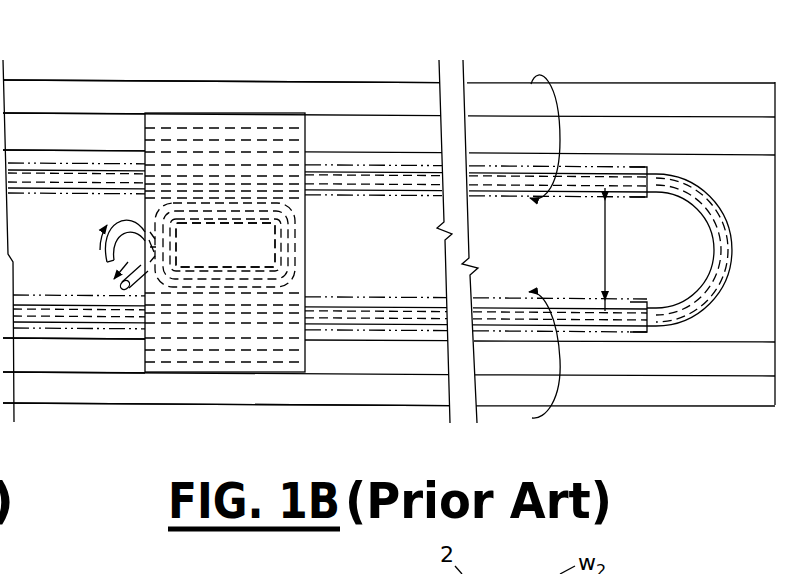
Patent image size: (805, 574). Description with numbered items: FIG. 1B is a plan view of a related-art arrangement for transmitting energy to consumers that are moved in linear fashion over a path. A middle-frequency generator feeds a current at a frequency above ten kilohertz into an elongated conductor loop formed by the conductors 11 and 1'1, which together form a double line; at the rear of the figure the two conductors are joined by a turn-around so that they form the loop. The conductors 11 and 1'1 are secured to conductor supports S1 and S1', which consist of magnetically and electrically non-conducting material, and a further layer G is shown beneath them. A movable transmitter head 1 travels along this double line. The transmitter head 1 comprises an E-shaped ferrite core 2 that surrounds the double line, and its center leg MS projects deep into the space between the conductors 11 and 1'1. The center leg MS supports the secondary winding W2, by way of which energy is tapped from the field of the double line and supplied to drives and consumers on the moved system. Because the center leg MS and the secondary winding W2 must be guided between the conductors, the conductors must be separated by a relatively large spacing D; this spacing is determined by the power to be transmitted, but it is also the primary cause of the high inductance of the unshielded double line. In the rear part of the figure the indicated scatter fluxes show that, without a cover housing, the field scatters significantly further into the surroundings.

The transmitter head 1 is at (221, 46).
The conductor 1'1 is at (327, 204).
The conductor 11 is at (370, 302).
The E-shaped ferrite core 2 is at (302, 274).
The secondary winding W2 is at (296, 238).
The spacing between the conductors D is at (618, 249).
The center leg MS is at (200, 196).
The conductor support S1' is at (74, 87).
The conductor support S1 is at (74, 399).
The ground / gap layer G is at (297, 406).